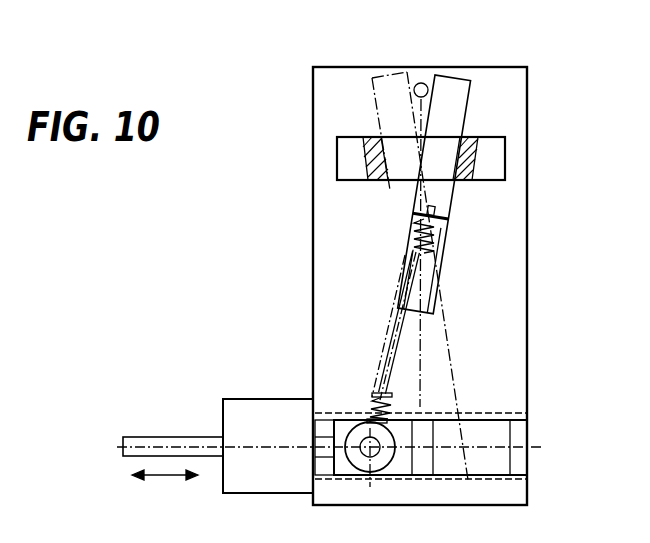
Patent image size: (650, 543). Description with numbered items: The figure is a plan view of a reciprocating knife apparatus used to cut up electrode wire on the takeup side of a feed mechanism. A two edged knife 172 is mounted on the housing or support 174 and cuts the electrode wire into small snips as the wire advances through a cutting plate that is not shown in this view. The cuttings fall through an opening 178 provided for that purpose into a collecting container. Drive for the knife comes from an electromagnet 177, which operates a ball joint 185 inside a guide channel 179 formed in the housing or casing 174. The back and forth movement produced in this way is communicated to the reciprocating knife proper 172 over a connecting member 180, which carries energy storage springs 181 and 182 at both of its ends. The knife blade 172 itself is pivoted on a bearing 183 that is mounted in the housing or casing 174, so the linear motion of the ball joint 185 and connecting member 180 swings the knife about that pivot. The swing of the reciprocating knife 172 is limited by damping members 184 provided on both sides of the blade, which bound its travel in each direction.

The two edged knife 172 is at (457, 120).
The housing 174 is at (322, 207).
The electromagnet 177 is at (265, 405).
The opening 178 is at (422, 83).
The guide channel 179 is at (520, 427).
The connecting member 180 is at (403, 342).
The energy storage spring 181 is at (397, 393).
The energy storage spring 182 is at (435, 240).
The bearing 183 is at (433, 270).
The damping member 184 is at (472, 167).
The ball joint 185 is at (338, 464).